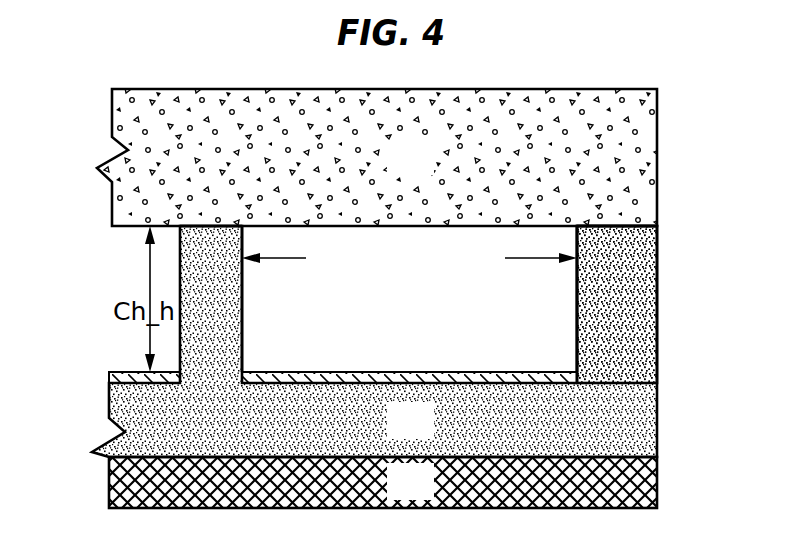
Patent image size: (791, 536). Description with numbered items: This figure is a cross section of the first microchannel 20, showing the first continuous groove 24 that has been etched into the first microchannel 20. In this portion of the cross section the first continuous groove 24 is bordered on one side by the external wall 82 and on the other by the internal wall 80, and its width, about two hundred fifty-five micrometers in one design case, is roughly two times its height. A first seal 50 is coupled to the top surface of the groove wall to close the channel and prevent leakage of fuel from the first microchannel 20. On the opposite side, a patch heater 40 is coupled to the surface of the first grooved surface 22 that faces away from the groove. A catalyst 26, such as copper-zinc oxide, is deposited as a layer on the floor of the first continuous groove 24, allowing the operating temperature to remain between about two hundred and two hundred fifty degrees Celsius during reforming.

The first microchannel 20 is at (428, 433).
The first grooved surface 22 is at (657, 252).
The first continuous groove 24 is at (428, 330).
The catalyst 26 is at (515, 372).
The patch heater 40 is at (428, 494).
The first seal 50 is at (428, 171).
The internal wall 80 is at (210, 226).
The external wall 82 is at (625, 226).